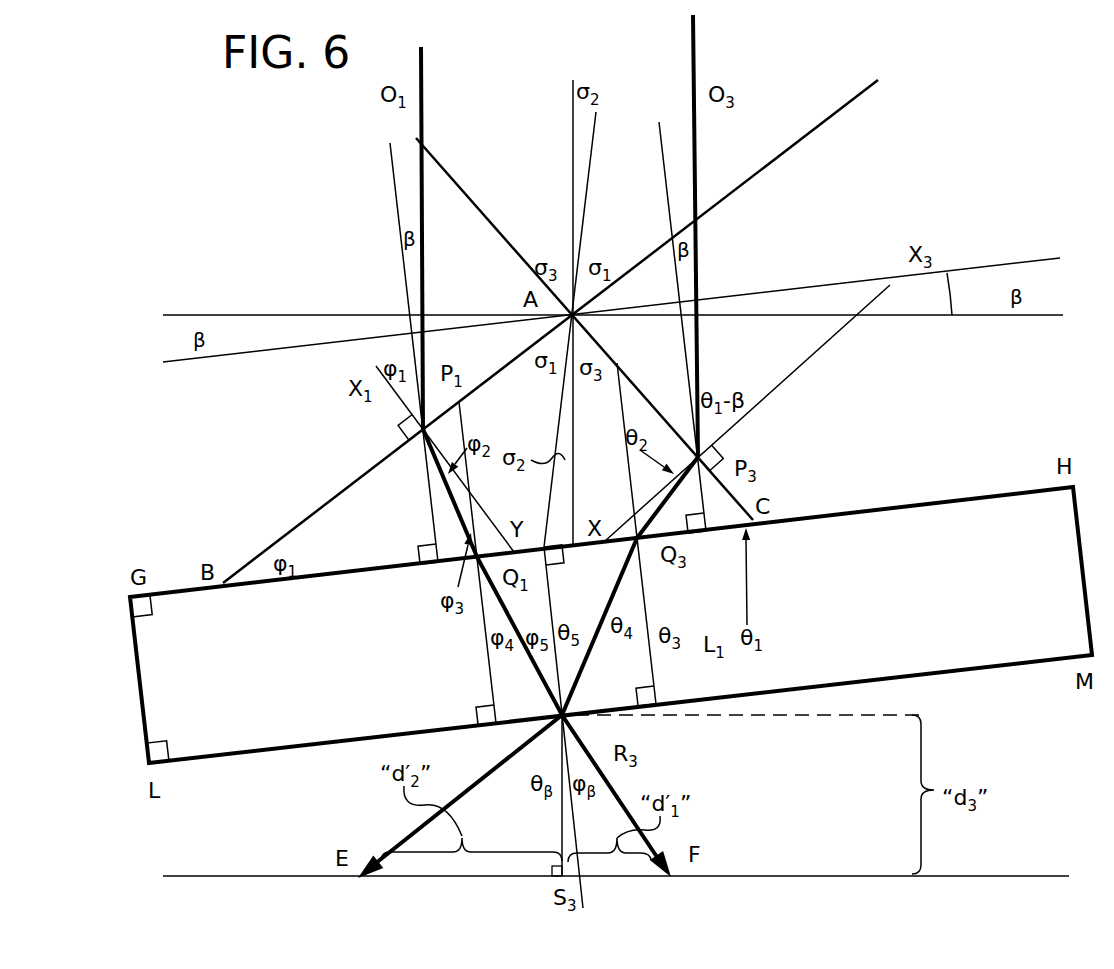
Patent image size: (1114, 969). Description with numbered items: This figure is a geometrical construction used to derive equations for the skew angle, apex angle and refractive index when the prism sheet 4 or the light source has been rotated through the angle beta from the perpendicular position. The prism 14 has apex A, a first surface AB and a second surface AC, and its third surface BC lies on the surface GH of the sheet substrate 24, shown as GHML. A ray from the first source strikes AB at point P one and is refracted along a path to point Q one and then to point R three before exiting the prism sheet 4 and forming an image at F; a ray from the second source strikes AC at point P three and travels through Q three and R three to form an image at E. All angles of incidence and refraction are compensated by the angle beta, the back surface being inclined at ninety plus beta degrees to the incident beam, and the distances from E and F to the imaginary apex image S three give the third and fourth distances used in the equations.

The prism sheet 4 is at (832, 430).
The prism 14 is at (634, 392).
The sheet substrate 24 is at (163, 683).